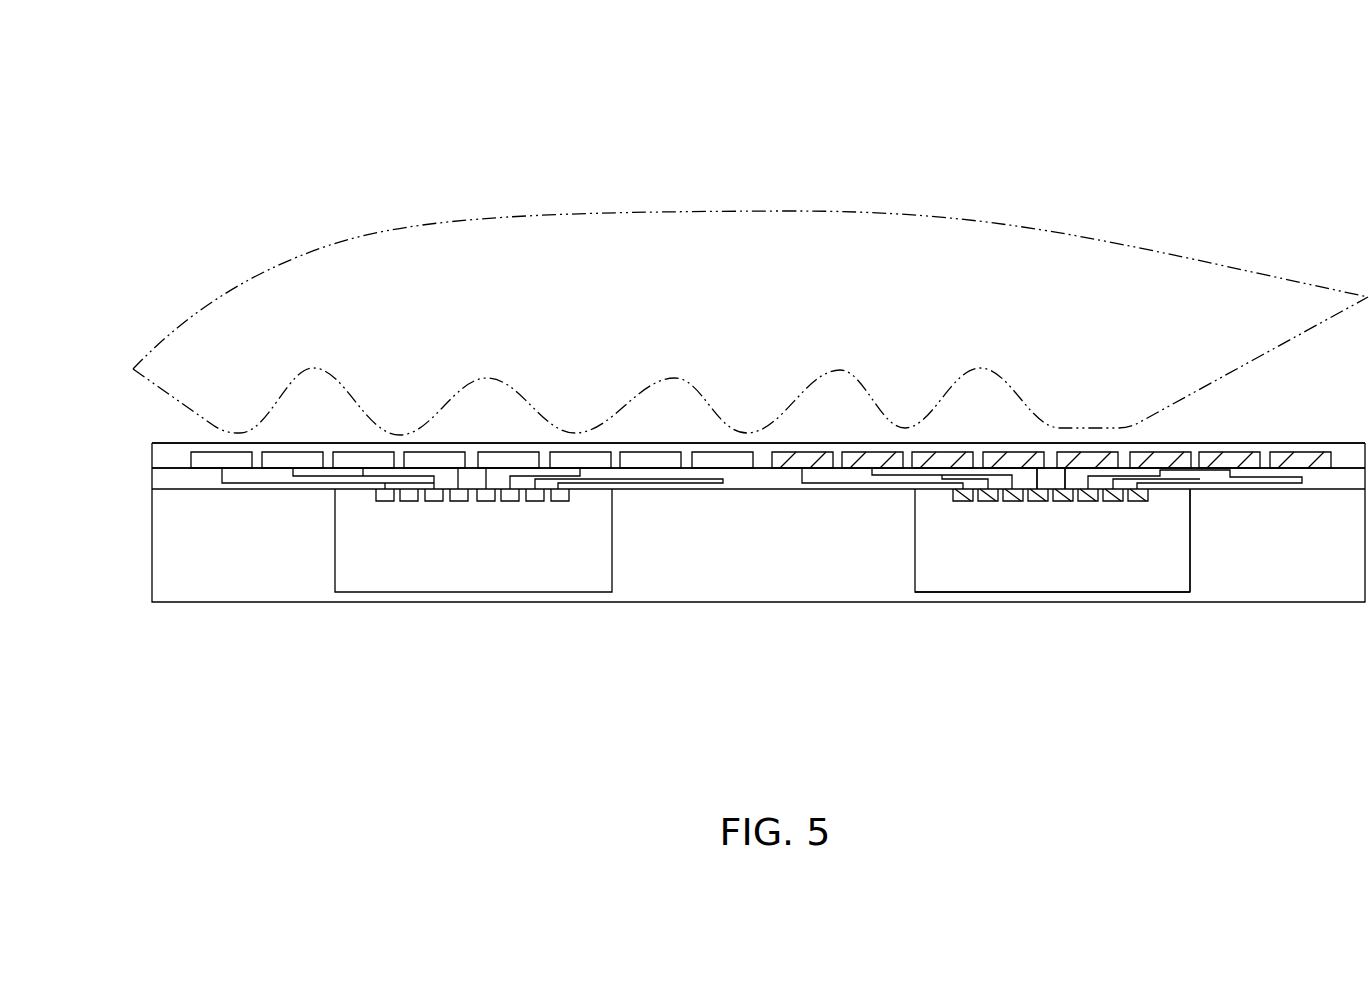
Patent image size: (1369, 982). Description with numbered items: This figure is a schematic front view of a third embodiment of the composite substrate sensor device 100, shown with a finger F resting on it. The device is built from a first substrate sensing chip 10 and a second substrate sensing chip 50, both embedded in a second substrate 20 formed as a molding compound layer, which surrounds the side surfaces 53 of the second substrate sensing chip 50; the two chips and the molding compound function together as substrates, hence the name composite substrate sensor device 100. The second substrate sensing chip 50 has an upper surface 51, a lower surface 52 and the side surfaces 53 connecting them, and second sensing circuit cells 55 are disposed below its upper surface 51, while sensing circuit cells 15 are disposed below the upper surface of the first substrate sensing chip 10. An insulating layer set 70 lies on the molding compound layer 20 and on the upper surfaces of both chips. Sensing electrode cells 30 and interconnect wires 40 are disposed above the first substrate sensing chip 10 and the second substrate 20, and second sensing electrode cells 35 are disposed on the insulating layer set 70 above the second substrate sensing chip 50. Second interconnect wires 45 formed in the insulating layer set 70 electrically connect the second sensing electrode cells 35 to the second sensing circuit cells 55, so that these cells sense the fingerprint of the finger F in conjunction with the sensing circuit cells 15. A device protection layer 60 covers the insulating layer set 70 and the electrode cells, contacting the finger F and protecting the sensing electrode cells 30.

The composite substrate sensor device 100 is at (867, 186).
The finger F is at (300, 248).
The second substrate (molding compound layer) 20 is at (155, 558).
The device protection layer 60 is at (163, 448).
The insulating layer set 70 is at (155, 480).
The sensing electrode cells 30 is at (225, 452).
The second sensing electrode cells 35 is at (805, 452).
The interconnect wires 40 is at (268, 483).
The second interconnect wires 45 is at (827, 485).
The upper surface 51 is at (1077, 485).
The first substrate sensing chip 10 is at (603, 552).
The sensing circuit cells 15 is at (385, 502).
The second substrate sensing chip 50 is at (1178, 552).
The side surfaces 53 is at (1192, 523).
The lower surface 52 is at (1067, 592).
The second sensing circuit cells 55 is at (960, 501).